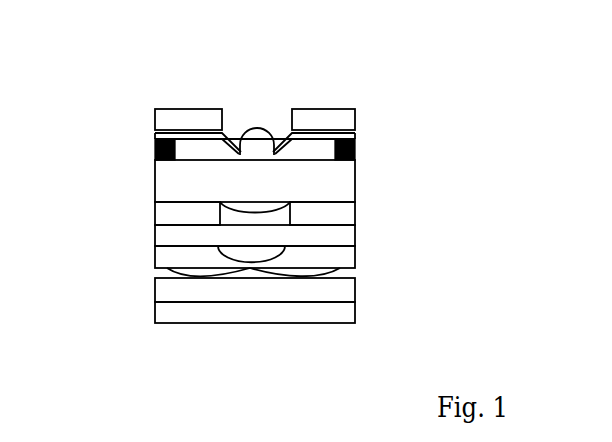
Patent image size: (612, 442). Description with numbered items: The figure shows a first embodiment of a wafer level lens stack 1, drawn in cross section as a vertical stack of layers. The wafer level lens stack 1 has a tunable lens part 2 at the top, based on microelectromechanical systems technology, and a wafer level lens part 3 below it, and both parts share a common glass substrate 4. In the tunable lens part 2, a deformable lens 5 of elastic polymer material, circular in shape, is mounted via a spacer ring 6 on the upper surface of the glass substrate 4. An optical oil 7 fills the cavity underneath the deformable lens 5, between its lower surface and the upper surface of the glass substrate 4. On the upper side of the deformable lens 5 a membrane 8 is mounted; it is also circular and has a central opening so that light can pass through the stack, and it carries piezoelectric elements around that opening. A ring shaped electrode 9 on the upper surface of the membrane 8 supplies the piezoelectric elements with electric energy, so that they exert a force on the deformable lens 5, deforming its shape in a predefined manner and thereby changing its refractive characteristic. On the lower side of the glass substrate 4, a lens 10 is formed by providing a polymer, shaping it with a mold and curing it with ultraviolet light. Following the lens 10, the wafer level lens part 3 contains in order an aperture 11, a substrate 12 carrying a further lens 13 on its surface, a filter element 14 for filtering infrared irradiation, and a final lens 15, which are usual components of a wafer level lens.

The wafer level lens stack 1 is at (271, 182).
The tunable lens part 2 is at (210, 143).
The wafer level lens part 3 is at (268, 259).
The glass substrate 4 is at (155, 183).
The deformable lens 5 is at (258, 128).
The spacer ring 6 is at (155, 148).
The optical oil 7 is at (210, 151).
The membrane 8 is at (155, 133).
The ring shaped electrode 9 is at (168, 109).
The lens 10 is at (220, 208).
The aperture 11 is at (155, 210).
The substrate 12 is at (155, 235).
The further lens 13 is at (155, 253).
The filter element 14 is at (155, 290).
The final lens 15 is at (155, 312).